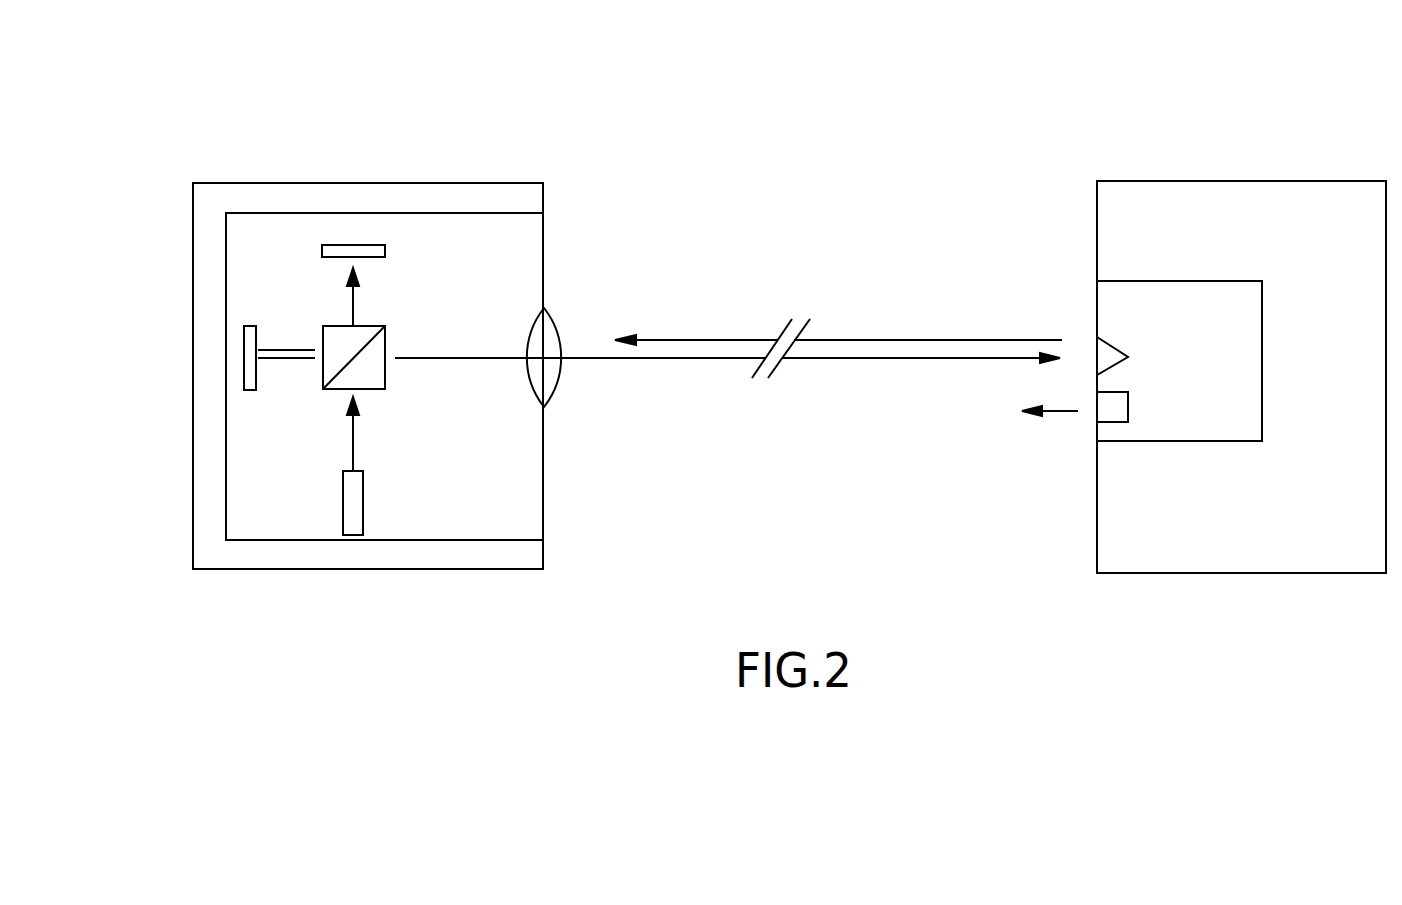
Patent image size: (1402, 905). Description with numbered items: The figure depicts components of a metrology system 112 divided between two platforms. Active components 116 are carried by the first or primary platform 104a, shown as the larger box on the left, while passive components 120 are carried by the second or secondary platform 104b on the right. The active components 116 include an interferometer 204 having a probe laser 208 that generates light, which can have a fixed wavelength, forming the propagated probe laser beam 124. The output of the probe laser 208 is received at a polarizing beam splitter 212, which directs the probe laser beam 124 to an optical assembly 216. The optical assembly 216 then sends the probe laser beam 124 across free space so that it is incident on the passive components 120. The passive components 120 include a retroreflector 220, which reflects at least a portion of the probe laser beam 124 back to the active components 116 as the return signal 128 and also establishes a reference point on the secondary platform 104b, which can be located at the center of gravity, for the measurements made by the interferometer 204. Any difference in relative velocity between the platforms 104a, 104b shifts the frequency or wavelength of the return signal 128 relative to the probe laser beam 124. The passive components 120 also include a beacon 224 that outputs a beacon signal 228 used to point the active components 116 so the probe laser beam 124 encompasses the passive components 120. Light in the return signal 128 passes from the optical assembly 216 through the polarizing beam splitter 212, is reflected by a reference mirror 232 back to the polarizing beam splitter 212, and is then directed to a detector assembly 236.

The metrology system 112 is at (802, 28).
The first or primary platform 104a is at (193, 230).
The second or secondary platform 104b is at (1372, 181).
The active components 116 is at (310, 196).
The passive components 120 is at (1190, 454).
The probe laser beam 124 is at (830, 358).
The return signal 128 is at (918, 340).
The interferometer 204 is at (262, 452).
The probe laser 208 is at (363, 513).
The polarizing beam splitter 212 is at (387, 390).
The optical assembly 216 is at (560, 388).
The retroreflector 220 is at (1126, 356).
The beacon 224 is at (1113, 422).
The beacon signal 228 is at (1058, 411).
The reference mirror 232 is at (244, 362).
The detector assembly 236 is at (373, 245).